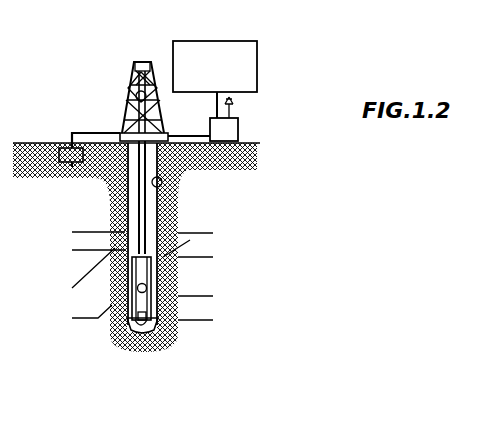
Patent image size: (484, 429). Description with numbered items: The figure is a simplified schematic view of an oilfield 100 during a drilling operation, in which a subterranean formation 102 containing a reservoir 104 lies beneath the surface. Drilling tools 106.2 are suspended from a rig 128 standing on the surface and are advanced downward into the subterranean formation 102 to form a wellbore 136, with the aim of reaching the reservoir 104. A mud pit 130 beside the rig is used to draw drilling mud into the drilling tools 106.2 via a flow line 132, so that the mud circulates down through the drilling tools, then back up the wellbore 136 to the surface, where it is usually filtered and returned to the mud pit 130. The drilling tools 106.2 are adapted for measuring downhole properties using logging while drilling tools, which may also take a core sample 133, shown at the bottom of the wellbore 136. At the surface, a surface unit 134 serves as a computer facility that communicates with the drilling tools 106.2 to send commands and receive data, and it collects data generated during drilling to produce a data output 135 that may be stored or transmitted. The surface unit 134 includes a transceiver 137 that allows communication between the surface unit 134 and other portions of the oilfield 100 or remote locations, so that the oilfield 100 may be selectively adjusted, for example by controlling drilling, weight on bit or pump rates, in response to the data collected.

The oilfield 100 is at (78, 72).
The rig 128 is at (124, 103).
The flow line 132 is at (70, 131).
The mud pit 130 is at (62, 166).
The data output 135 is at (240, 41).
The transceiver 137 is at (234, 112).
The surface unit 134 is at (243, 140).
The wellbore 136 is at (163, 197).
The subterranean formation 102 is at (196, 230).
The reservoir 104 is at (223, 280).
The drilling tools 106.2 is at (131, 270).
The core sample 133 is at (114, 333).